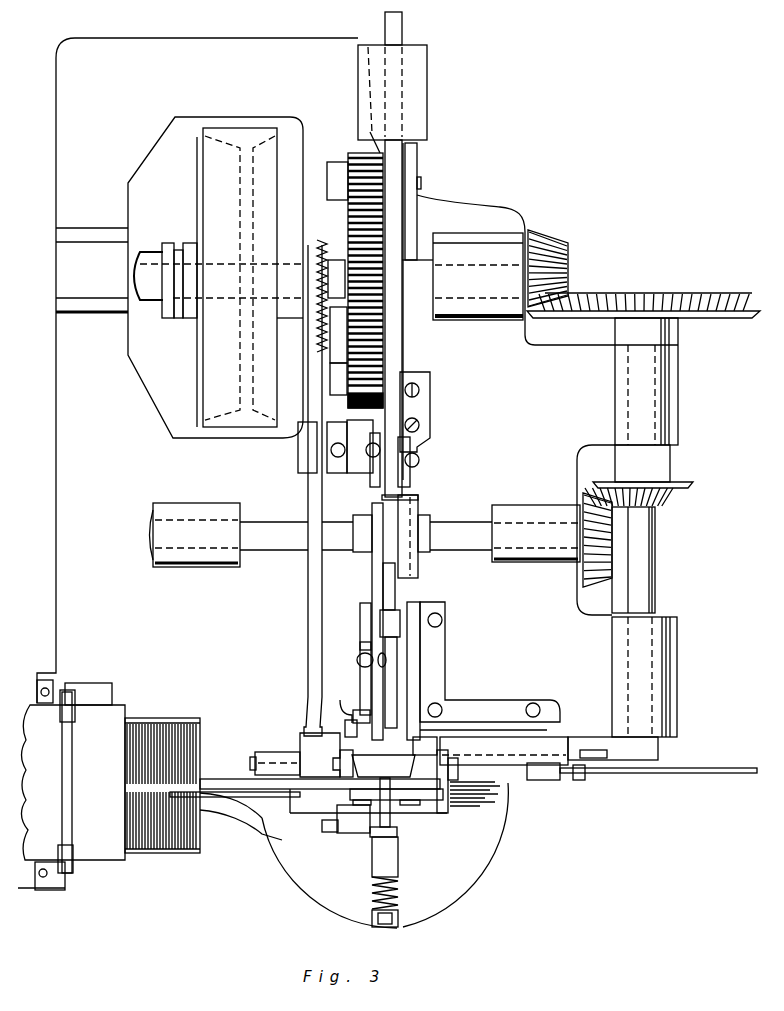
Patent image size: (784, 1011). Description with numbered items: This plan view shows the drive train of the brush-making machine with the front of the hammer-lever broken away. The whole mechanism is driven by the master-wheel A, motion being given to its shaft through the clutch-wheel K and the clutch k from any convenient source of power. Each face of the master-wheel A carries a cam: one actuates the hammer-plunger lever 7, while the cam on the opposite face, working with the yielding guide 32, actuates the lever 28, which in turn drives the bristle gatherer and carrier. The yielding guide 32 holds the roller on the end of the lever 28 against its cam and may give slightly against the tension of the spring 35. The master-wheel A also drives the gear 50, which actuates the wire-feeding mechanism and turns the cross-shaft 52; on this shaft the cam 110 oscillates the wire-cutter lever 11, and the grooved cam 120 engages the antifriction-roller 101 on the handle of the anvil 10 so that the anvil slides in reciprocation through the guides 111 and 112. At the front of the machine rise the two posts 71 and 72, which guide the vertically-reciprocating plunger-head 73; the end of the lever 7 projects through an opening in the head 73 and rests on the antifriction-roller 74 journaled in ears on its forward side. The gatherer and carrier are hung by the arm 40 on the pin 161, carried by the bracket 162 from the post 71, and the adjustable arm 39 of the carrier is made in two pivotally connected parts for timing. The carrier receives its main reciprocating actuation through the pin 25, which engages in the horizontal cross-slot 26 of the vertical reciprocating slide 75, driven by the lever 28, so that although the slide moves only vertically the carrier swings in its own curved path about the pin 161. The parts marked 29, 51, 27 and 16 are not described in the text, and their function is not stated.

The yielding guide 32 is at (338, 173).
The clutch-wheel K is at (258, 188).
The clutch k is at (200, 195).
The master-wheel A is at (388, 179).
The spring 35 is at (317, 338).
The hammer-plunger lever 7 is at (405, 350).
The gear 50 is at (672, 330).
The lever 28 is at (308, 503).
The carriage 29 is at (360, 468).
The cam 110 is at (373, 553).
The antifriction-roller 101 is at (395, 580).
The anvil 10 is at (390, 676).
The guide 111 is at (398, 623).
The wire-cutter lever 11 is at (353, 713).
The cross-shaft 52 is at (420, 578).
The cam 120 is at (435, 546).
The guide 112 is at (402, 729).
The bearing bracket 51 is at (657, 549).
The vertical reciprocating slide 75 is at (308, 731).
The block 27 is at (277, 755).
The horizontal cross-slot 26 is at (250, 763).
The post 72 is at (350, 757).
The plunger-head 73 is at (383, 766).
The post 71 is at (425, 746).
The pin 25 is at (302, 782).
The arm 39 is at (348, 828).
The bolt 16 is at (398, 856).
The antifriction-roller 74 is at (447, 815).
The arm 40 is at (283, 841).
The pin 161 is at (398, 928).
The bracket 162 is at (497, 804).